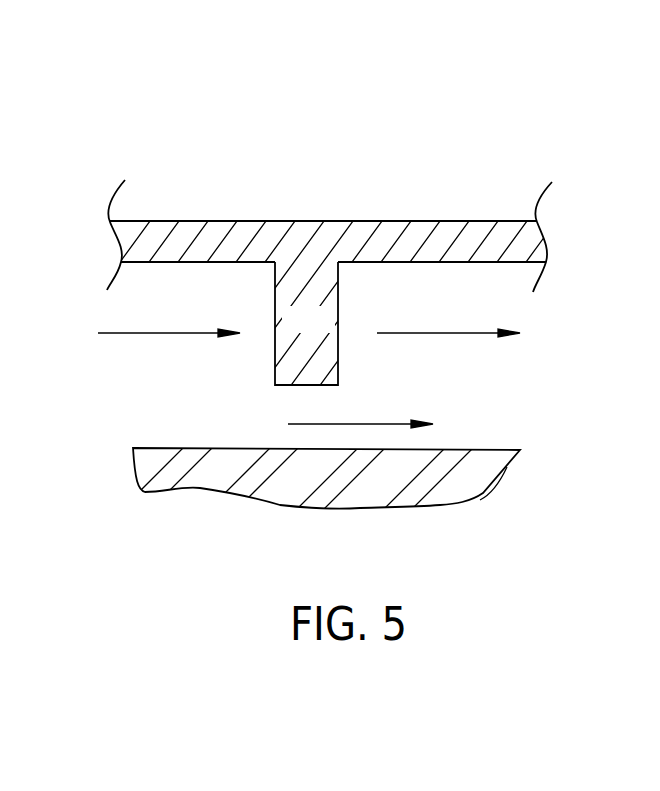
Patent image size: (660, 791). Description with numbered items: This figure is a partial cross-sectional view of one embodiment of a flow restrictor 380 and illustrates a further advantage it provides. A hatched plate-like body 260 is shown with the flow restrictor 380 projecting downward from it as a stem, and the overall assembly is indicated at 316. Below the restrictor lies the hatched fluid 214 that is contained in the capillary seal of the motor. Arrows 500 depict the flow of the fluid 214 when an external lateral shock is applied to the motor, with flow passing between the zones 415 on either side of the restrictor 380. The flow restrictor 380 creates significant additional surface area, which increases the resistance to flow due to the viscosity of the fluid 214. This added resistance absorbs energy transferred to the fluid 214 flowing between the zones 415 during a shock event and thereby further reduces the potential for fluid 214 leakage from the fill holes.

The showerhead assembly 316 is at (345, 143).
The zones 415 is at (175, 302).
The faceplate 260 is at (232, 238).
The flow restrictor 380 is at (332, 331).
The arrows 500 is at (157, 334).
The fluid 214 is at (228, 433).